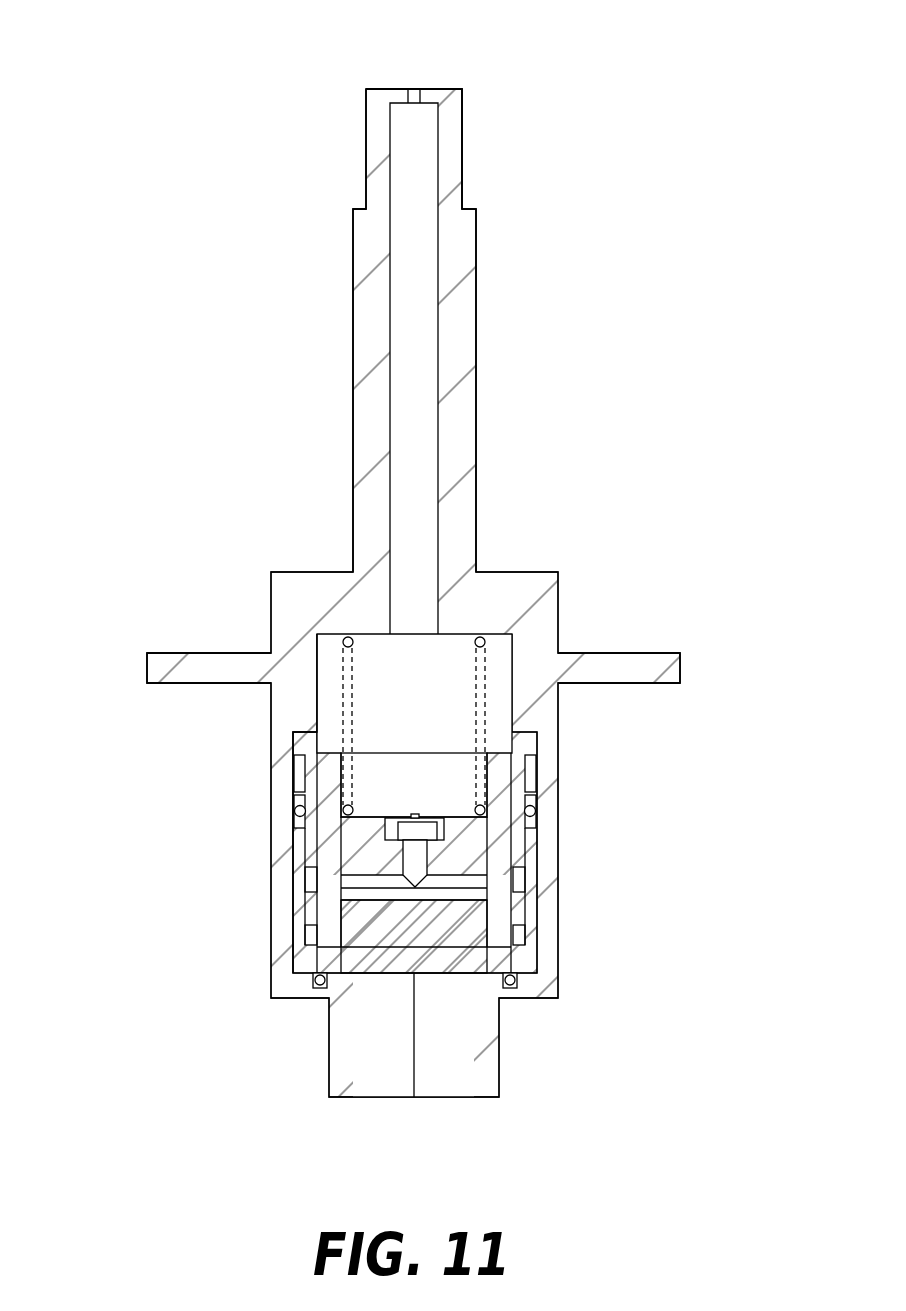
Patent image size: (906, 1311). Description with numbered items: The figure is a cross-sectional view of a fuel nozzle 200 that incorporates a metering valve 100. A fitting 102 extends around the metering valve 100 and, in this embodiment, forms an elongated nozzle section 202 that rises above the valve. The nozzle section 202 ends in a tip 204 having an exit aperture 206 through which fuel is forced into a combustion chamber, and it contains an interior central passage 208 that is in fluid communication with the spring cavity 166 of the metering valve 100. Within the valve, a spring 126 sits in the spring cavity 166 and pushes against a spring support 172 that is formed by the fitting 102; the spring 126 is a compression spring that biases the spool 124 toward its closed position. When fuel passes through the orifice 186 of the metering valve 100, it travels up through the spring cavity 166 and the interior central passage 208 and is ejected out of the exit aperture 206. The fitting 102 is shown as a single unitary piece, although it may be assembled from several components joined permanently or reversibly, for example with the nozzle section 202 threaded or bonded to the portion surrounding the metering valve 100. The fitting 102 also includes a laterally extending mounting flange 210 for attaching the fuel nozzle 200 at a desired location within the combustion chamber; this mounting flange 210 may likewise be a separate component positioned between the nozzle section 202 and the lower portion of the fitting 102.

The fuel nozzle 200 is at (175, 184).
The nozzle section 202 is at (458, 280).
The tip 204 is at (458, 122).
The exit aperture 206 is at (421, 87).
The interior central passage 208 is at (428, 383).
The mounting flange 210 is at (172, 672).
The spring support 172 is at (337, 615).
The metering valve 100 is at (332, 718).
The fitting 102 is at (550, 795).
The spool 124 is at (480, 850).
The spring 126 is at (485, 706).
The spring cavity 166 is at (377, 775).
The orifice 186 is at (415, 815).